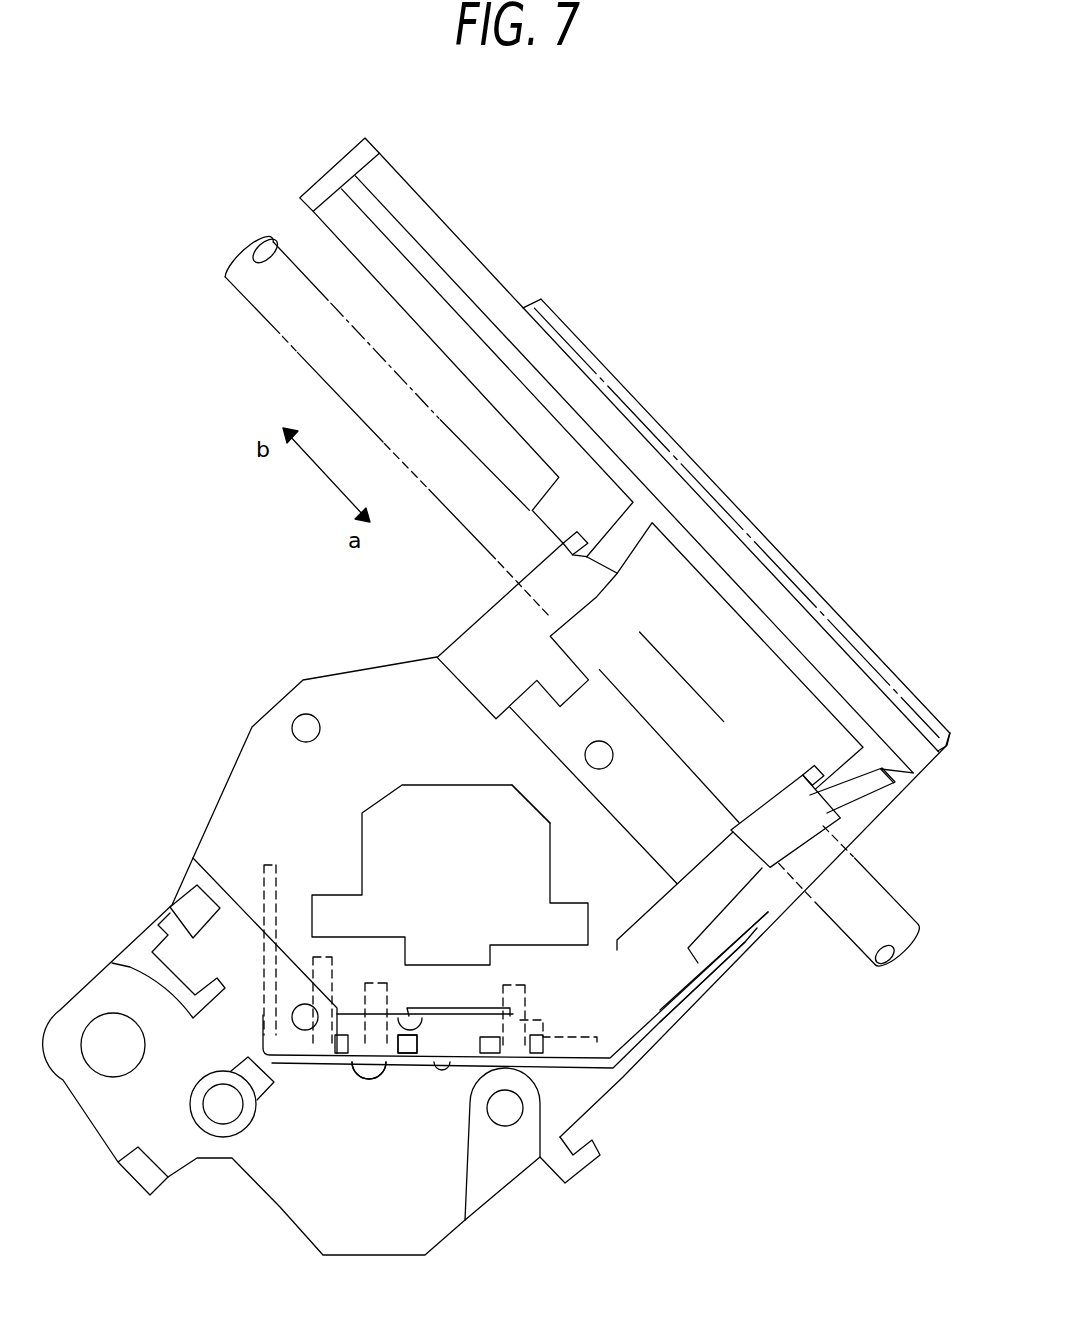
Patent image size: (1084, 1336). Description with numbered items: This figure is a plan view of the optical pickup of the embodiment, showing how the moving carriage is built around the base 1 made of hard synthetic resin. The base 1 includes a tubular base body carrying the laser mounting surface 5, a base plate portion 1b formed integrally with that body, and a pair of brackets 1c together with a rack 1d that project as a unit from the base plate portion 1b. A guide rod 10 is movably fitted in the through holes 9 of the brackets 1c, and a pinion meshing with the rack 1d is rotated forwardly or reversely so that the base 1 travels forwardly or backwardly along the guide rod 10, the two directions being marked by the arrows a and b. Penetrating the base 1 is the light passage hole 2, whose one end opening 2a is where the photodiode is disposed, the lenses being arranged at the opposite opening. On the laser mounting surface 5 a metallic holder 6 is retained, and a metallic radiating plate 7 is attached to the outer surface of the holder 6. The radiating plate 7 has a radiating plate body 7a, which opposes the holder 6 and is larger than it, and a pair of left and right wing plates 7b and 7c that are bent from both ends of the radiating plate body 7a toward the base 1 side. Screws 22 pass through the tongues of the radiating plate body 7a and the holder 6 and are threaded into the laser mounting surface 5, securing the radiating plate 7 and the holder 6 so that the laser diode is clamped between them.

The base 1 is at (194, 834).
The base plate portion 1b is at (417, 1227).
The brackets 1c is at (492, 620).
The rack 1d is at (716, 486).
The light passage hole 2 is at (406, 819).
The one end opening 2a is at (438, 805).
The laser mounting surface 5 is at (430, 1007).
The holder 6 is at (467, 1013).
The radiating plate 7 is at (315, 1062).
The radiating plate body 7a is at (418, 1062).
The wing plate 7b is at (276, 862).
The wing plate 7c is at (681, 982).
The through holes 9 is at (598, 595).
The guide rod 10 is at (328, 367).
The screws 22 is at (373, 1067).